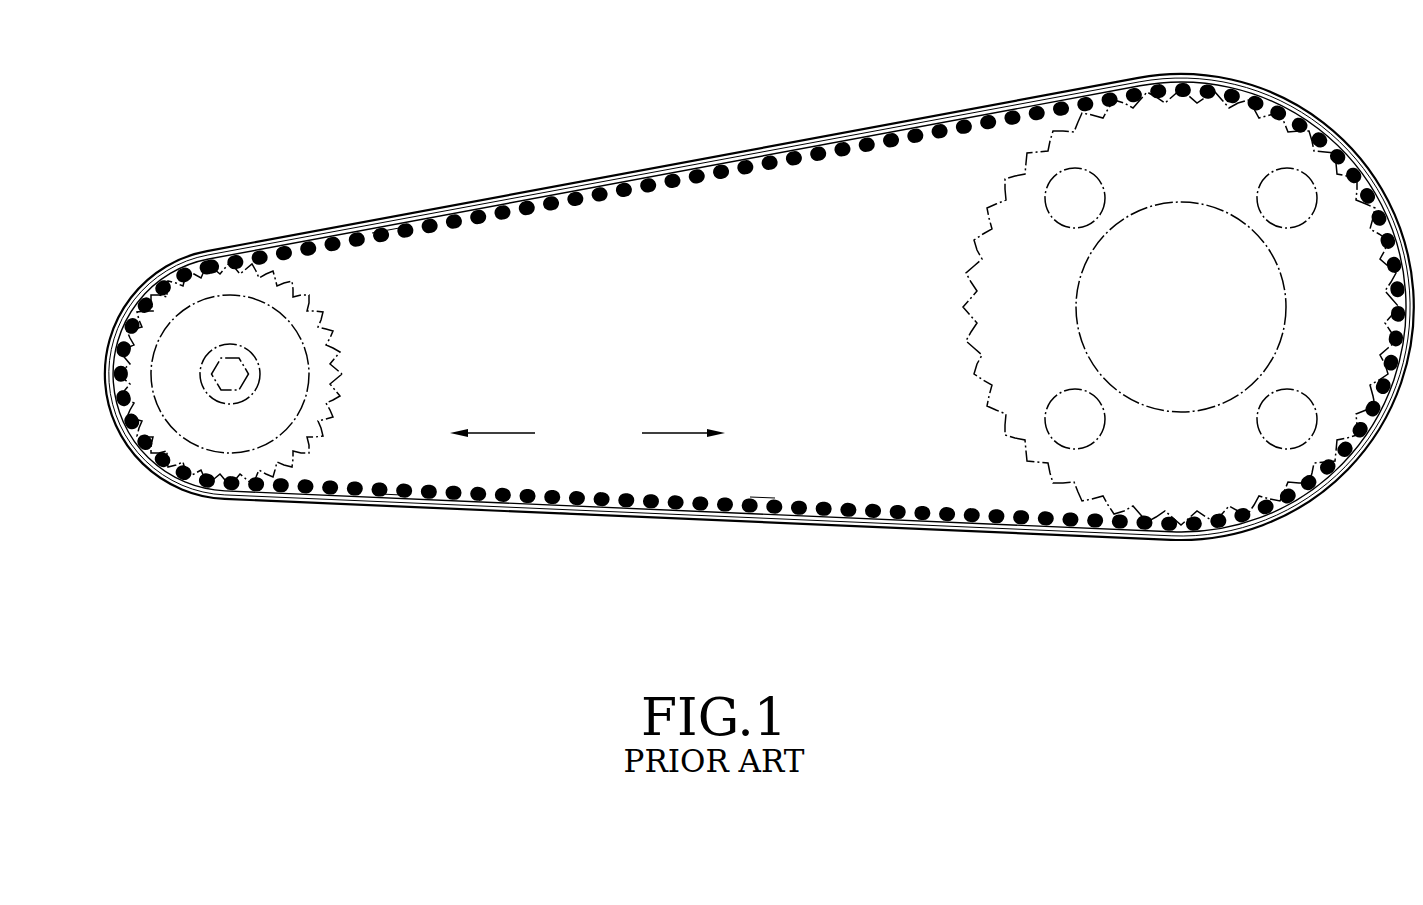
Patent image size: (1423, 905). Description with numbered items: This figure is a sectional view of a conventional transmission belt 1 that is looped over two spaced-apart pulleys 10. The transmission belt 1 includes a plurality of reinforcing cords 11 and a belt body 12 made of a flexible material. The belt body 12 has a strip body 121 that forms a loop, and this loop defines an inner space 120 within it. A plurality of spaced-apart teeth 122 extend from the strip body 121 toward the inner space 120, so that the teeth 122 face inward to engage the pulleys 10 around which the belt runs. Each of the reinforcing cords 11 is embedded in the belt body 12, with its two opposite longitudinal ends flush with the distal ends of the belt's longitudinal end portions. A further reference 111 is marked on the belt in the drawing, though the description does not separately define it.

The transmission belt 1 is at (759, 338).
The pulleys 10 is at (292, 438).
The reinforcing cords 11 is at (470, 505).
The inner surface of belt body 111 is at (575, 512).
The belt body 12 is at (578, 536).
The inner space 120 is at (762, 455).
The strip body 121 is at (391, 503).
The teeth 122 is at (403, 240).